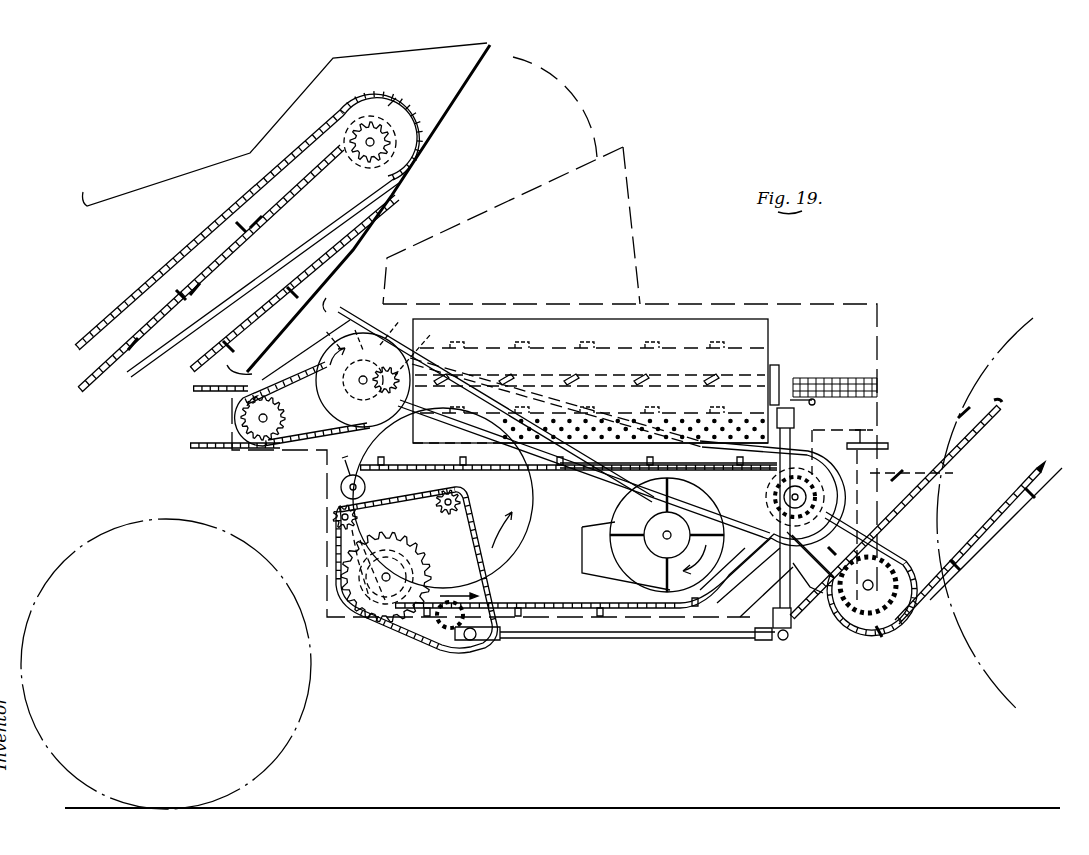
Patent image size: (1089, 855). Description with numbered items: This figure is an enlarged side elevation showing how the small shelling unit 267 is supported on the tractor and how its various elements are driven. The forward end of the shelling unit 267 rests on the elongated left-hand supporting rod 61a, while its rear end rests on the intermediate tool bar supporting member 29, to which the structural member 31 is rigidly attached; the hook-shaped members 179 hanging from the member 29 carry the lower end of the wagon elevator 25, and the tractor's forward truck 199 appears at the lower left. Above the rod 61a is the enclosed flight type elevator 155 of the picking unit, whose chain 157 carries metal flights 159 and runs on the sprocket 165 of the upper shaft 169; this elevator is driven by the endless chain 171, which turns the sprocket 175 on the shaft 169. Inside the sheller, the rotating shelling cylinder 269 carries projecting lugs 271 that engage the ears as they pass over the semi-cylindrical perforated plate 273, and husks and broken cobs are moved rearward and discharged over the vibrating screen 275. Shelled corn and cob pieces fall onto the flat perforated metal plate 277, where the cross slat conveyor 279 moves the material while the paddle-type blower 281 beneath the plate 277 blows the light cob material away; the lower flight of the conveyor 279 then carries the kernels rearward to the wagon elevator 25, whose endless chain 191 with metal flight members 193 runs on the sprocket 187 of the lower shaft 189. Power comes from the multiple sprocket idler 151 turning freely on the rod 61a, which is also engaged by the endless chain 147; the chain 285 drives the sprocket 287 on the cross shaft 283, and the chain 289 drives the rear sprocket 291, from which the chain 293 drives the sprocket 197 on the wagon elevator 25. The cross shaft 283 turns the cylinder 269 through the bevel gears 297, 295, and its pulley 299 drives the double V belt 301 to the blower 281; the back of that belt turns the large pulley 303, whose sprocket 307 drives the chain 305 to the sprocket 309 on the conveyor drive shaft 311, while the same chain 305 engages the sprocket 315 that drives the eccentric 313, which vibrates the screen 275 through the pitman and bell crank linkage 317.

The wagon elevator 25 is at (898, 509).
The intermediate tool bar supporting member 29 is at (890, 447).
The structural member 31 is at (870, 433).
The supporting rod 61a is at (263, 424).
The endless chain 147 is at (205, 393).
The multiple sprocket idler 151 is at (240, 430).
The flight type elevator 155 is at (272, 243).
The chain 157 is at (240, 242).
The metal flights 159 is at (193, 287).
The sprocket 165 is at (374, 144).
The shaft 169 is at (397, 120).
The endless chain 171 is at (125, 378).
The sprocket 175 is at (378, 108).
The hook-shaped members 179 is at (1006, 447).
The sprocket 187 is at (869, 592).
The shaft 189 is at (893, 620).
The endless chain 191 is at (968, 536).
The metal flight members 193 is at (950, 560).
The sprocket 197 is at (824, 600).
The forward truck 199 is at (268, 742).
The shelling unit 267 is at (627, 434).
The shelling cylinder 269 is at (720, 357).
The projecting lugs 271 is at (668, 343).
The perforated plate 273 is at (772, 395).
The vibrating screen 275 is at (877, 385).
The perforated metal plate 277 is at (636, 535).
The cross slat conveyor 279 is at (538, 610).
The paddle-type blower 281 is at (665, 565).
The cross shaft 283 is at (363, 394).
The chain 285 is at (298, 378).
The sprocket 287 is at (357, 331).
The chain 289 is at (455, 350).
The sprocket 291 is at (767, 455).
The chain 293 is at (885, 517).
The bevel gear 295 is at (428, 320).
The bevel gear 297 is at (393, 320).
The pulley 299 is at (363, 340).
The double V belt 301 is at (583, 483).
The large pulley 303 is at (512, 545).
The chain 305 is at (400, 500).
The sprocket 307 is at (458, 502).
The sprocket 309 is at (372, 608).
The conveyor drive shaft 311 is at (388, 584).
The eccentric 313 is at (472, 642).
The sprocket 315 is at (455, 624).
The pitman and bell crank linkage 317 is at (570, 640).